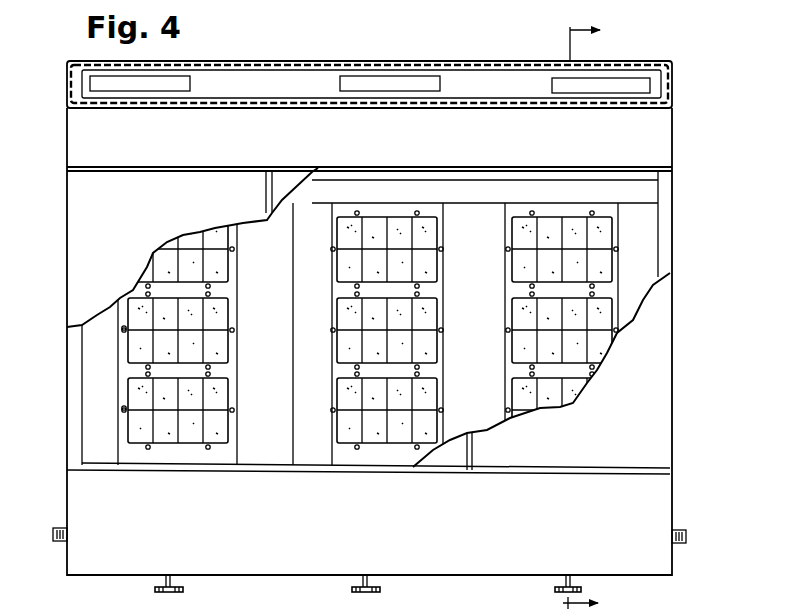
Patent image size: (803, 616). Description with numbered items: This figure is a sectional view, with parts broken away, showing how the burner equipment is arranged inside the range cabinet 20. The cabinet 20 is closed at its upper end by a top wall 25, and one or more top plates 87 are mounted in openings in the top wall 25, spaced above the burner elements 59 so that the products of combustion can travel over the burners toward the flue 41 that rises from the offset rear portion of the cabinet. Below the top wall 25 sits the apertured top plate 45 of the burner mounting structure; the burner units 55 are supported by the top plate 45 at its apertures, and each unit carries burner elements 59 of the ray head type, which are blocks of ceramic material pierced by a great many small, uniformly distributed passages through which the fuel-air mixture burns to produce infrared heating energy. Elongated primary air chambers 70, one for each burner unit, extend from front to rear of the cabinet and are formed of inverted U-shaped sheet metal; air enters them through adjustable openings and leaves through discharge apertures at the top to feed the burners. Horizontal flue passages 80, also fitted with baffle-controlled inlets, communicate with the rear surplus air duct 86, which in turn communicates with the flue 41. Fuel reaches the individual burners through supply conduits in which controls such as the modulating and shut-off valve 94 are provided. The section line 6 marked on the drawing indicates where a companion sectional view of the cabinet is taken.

The range cabinet 20 is at (679, 342).
The flue 41 is at (475, 62).
The section line 6- 6 is at (567, 317).
The rear surplus air duct 86 is at (395, 190).
The top plate 87 is at (80, 223).
The apertured top plate 45 is at (270, 452).
The primary air chamber 70 is at (110, 452).
The channels / slots 55 is at (330, 350).
The horizontal flue passage 80 is at (277, 325).
The burner element 59 is at (523, 263).
The top wall 25 is at (665, 503).
The modulating and shut-off valve 94 is at (168, 595).